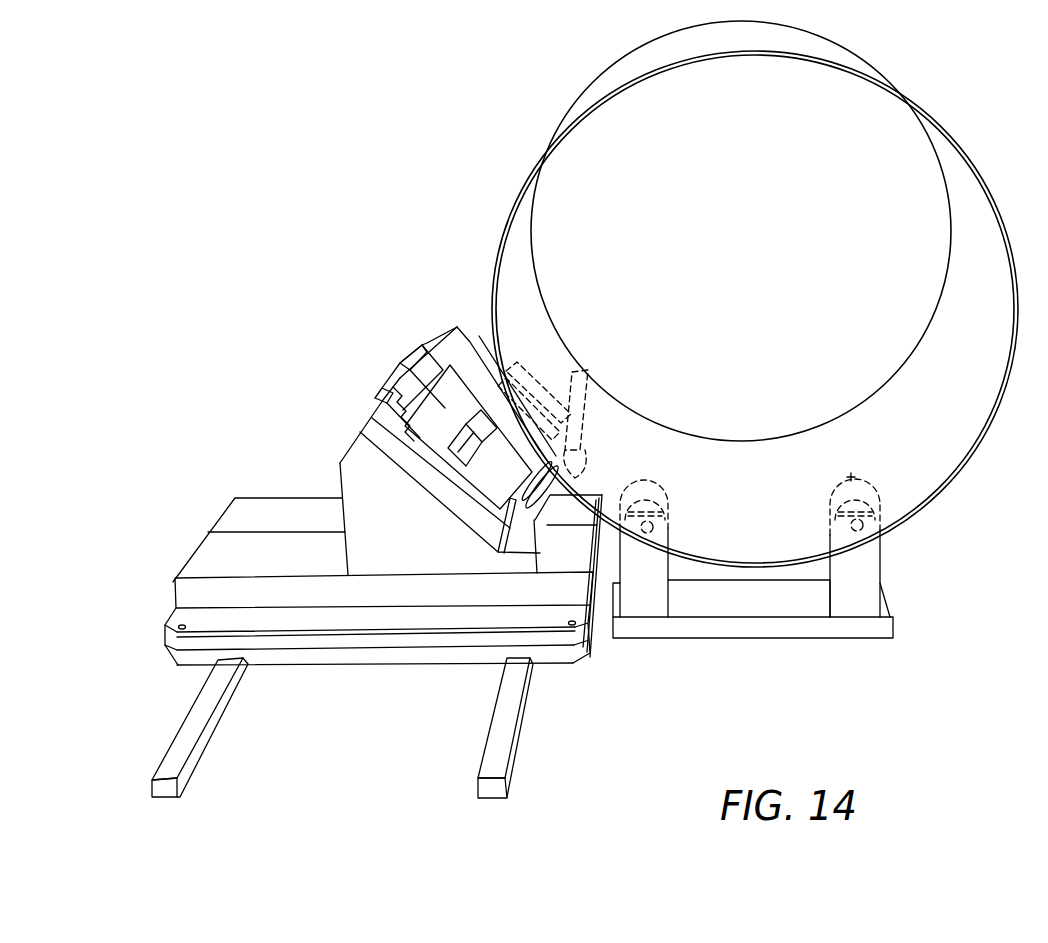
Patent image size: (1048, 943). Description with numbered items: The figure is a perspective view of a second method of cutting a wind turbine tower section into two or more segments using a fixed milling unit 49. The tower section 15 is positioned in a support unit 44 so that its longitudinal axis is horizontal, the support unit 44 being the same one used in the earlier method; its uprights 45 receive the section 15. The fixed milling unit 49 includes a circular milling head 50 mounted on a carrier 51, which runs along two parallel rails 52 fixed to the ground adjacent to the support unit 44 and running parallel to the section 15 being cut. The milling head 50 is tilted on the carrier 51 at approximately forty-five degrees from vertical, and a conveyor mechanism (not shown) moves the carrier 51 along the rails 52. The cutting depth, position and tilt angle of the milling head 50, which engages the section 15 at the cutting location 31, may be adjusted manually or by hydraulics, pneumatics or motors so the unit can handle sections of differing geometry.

The tower section 15 is at (969, 76).
The sensor 31 is at (597, 390).
The support unit 44 is at (752, 628).
The pipe support uprights 45 is at (852, 476).
The fixed milling unit 49 is at (340, 355).
The circular milling head 50 is at (558, 508).
The carrier 51 is at (372, 643).
The rails 52 is at (165, 792).